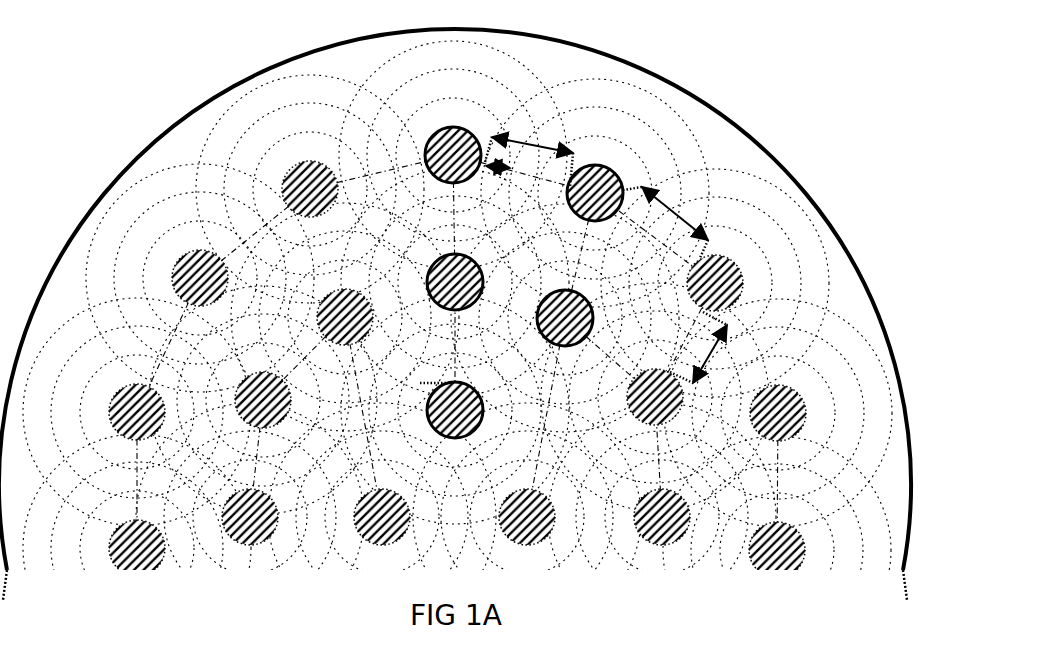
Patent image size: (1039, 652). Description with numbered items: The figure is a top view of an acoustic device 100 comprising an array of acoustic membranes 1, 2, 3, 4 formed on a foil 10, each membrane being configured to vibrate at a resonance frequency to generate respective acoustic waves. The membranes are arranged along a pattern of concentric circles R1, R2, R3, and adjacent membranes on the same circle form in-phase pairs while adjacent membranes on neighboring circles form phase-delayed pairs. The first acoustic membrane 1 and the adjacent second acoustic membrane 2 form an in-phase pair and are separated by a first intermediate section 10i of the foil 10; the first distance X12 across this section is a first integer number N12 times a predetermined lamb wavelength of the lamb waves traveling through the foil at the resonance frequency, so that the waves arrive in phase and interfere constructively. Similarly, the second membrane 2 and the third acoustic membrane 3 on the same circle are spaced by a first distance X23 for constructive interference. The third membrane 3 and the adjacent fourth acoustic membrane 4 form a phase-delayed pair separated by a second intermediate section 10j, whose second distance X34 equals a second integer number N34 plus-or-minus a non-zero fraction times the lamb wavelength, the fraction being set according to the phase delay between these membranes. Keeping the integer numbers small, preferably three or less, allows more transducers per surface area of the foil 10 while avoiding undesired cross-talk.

The acoustic device 100 is at (96, 92).
The foil 10 is at (735, 145).
The first acoustic membrane 1 is at (448, 172).
The second acoustic membrane 2 is at (589, 211).
The third acoustic membrane 3 is at (704, 300).
The fourth acoustic membrane 4 is at (646, 412).
The first concentric circle R1 is at (405, 177).
The second concentric circle R2 is at (415, 300).
The third concentric circle R3 is at (423, 435).
The first intermediate section 10i is at (555, 188).
The second intermediate section 10j is at (697, 347).
The first distance X12 is at (532, 131).
The first distance X23 is at (680, 212).
The second distance X34 is at (724, 354).
The first integer number N12 is at (545, 95).
The second integer number N34 is at (802, 366).